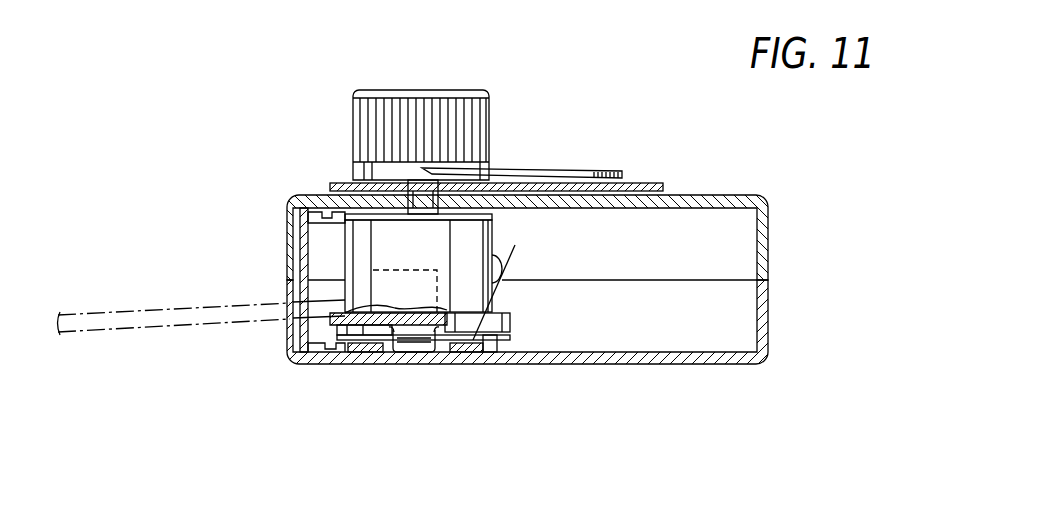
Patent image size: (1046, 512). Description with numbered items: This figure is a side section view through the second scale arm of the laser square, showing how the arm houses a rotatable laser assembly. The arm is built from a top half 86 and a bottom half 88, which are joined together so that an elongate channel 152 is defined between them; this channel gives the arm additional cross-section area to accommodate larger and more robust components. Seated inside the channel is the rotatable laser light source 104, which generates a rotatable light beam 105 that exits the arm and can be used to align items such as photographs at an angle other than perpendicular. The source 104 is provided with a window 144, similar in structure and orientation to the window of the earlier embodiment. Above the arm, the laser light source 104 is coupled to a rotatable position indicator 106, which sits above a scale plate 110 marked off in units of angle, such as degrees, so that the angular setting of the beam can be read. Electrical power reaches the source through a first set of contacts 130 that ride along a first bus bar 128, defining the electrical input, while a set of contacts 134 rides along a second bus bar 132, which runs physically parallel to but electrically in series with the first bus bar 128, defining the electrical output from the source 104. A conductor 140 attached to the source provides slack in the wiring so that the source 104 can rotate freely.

The top half 86 is at (773, 228).
The bottom half 88 is at (772, 318).
The elongate channel 152 is at (712, 240).
The window 144 is at (296, 235).
The rotatable position indicator 106 is at (413, 90).
The scale plate 110 is at (640, 184).
The rotatable laser light source 104 is at (467, 240).
The conductor 140 is at (506, 266).
The first set of contacts 130 is at (337, 358).
The first bus bar 128 is at (372, 353).
The set of contacts 134 is at (463, 347).
The second bus bar 132 is at (483, 357).
The rotatable light beam 105 is at (103, 326).